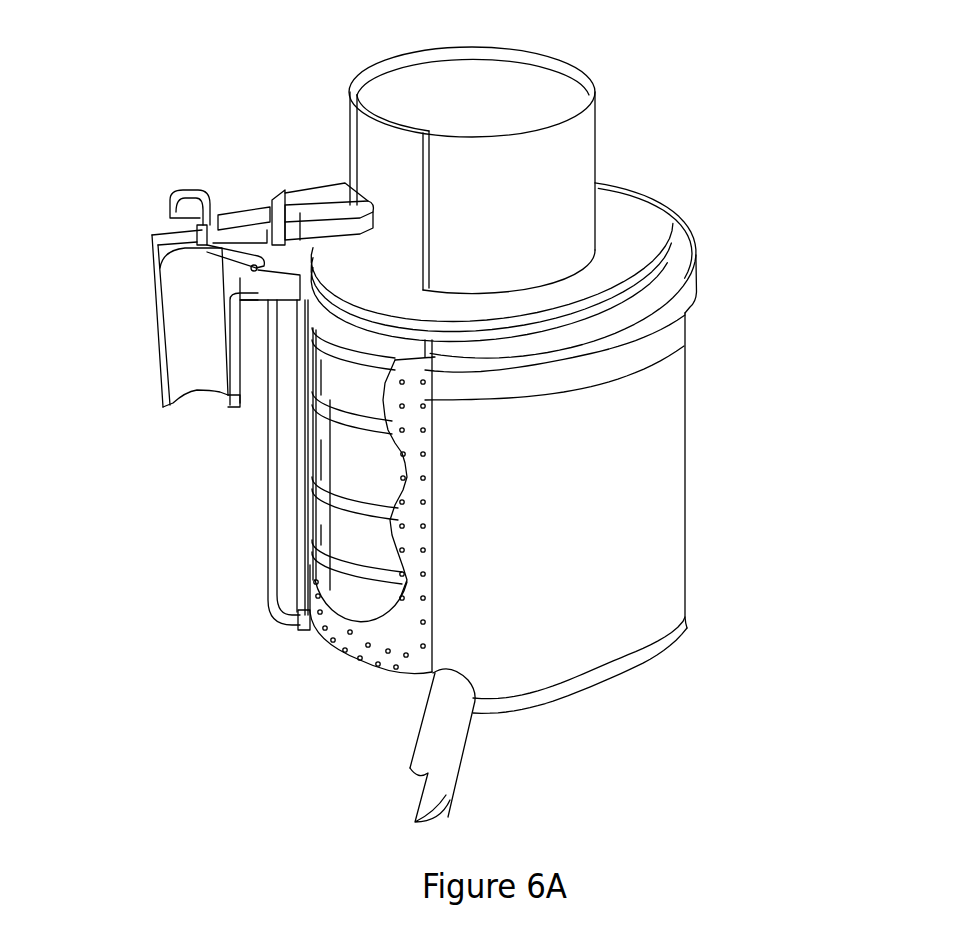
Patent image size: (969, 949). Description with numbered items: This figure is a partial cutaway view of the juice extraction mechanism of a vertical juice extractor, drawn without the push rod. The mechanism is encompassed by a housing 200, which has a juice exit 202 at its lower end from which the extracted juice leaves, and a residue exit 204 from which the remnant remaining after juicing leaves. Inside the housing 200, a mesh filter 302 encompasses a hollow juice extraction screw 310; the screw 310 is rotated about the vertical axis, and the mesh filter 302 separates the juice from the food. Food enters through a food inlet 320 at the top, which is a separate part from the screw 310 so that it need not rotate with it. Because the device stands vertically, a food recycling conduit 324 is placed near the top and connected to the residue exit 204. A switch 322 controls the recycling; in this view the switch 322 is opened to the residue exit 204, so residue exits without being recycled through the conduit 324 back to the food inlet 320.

The housing 200 is at (668, 420).
The juice exit 202 is at (471, 757).
The residue exit 204 is at (181, 334).
The mesh filter 302 is at (328, 655).
The hollow juice extraction screw 310 is at (344, 468).
The food inlet 320 is at (607, 148).
The switch 322 is at (255, 227).
The food recycling conduit 324 is at (320, 201).